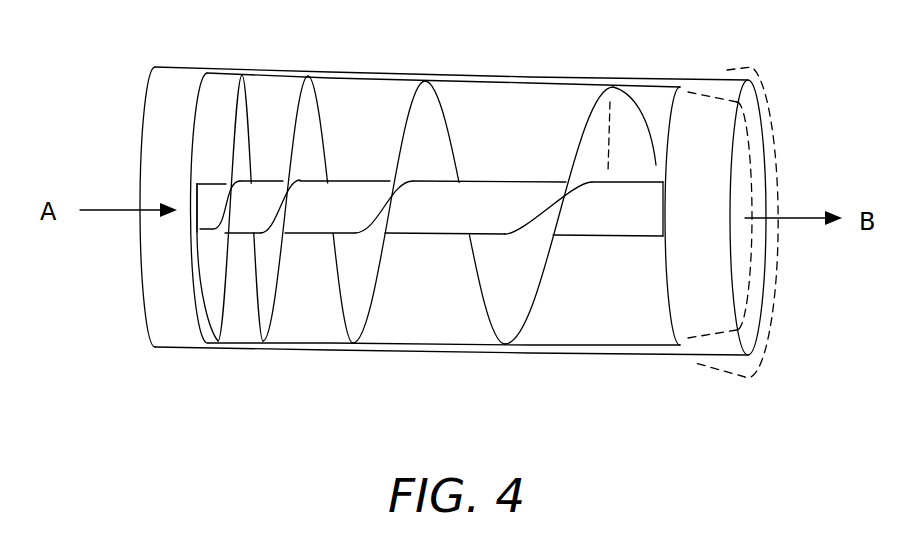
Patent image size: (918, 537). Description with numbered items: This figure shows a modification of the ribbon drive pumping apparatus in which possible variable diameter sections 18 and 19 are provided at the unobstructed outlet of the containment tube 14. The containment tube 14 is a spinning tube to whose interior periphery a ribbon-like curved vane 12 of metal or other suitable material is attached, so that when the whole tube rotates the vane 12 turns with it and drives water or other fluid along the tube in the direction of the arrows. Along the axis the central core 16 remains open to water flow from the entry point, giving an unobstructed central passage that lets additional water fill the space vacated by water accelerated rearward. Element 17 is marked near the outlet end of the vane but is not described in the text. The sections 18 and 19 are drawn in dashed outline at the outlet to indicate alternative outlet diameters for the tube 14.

The ribbon drive vane 12 is at (317, 96).
The containment tube 14 is at (543, 75).
The central core 16 is at (612, 240).
The flight end 17 is at (615, 97).
The variable diameter section 18 is at (692, 91).
The variable diameter section 19 is at (728, 70).